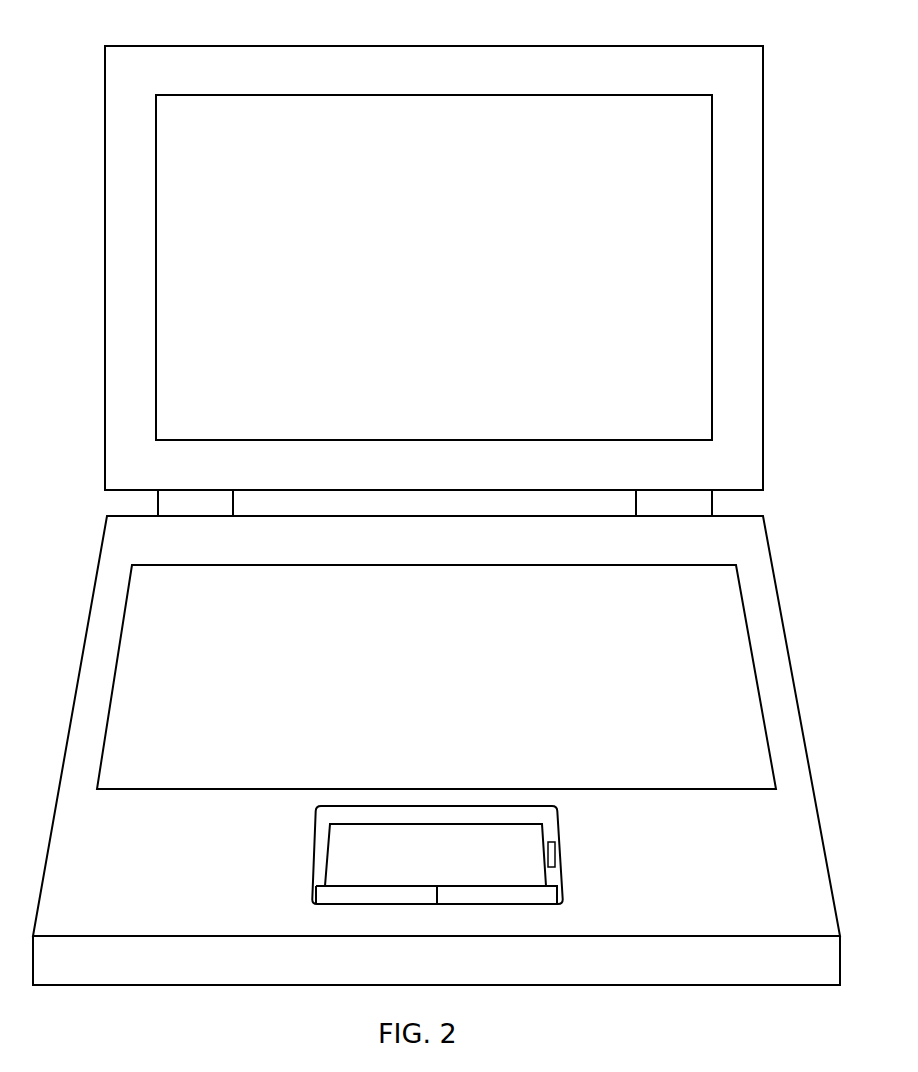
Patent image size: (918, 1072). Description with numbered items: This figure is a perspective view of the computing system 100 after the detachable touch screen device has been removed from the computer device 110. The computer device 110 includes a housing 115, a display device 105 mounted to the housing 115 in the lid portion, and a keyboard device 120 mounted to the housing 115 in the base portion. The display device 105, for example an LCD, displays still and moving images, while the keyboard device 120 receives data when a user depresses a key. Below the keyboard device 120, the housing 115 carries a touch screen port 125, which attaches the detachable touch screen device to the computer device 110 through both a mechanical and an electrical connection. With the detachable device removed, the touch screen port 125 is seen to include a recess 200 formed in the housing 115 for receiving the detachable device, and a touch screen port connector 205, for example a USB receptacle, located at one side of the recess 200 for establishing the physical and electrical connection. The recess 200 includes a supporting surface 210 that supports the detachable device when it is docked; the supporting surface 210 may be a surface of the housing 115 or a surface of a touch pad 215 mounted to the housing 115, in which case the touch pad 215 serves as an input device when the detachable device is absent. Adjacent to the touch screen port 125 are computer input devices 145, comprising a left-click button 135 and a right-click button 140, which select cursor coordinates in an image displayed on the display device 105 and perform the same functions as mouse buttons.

The computing system 100 is at (80, 19).
The display device 105 is at (450, 120).
The computer device 110 is at (104, 217).
The housing 115 is at (95, 592).
The keyboard device 120 is at (451, 613).
The touch screen port 125 is at (311, 810).
The left-click button 135 is at (313, 890).
The right-click button 140 is at (560, 892).
The computer input devices 145 is at (433, 912).
The recess 200 is at (546, 815).
The touch screen port connector 205 is at (556, 848).
The supporting surface 210 is at (335, 840).
The touch pad 215 is at (340, 860).